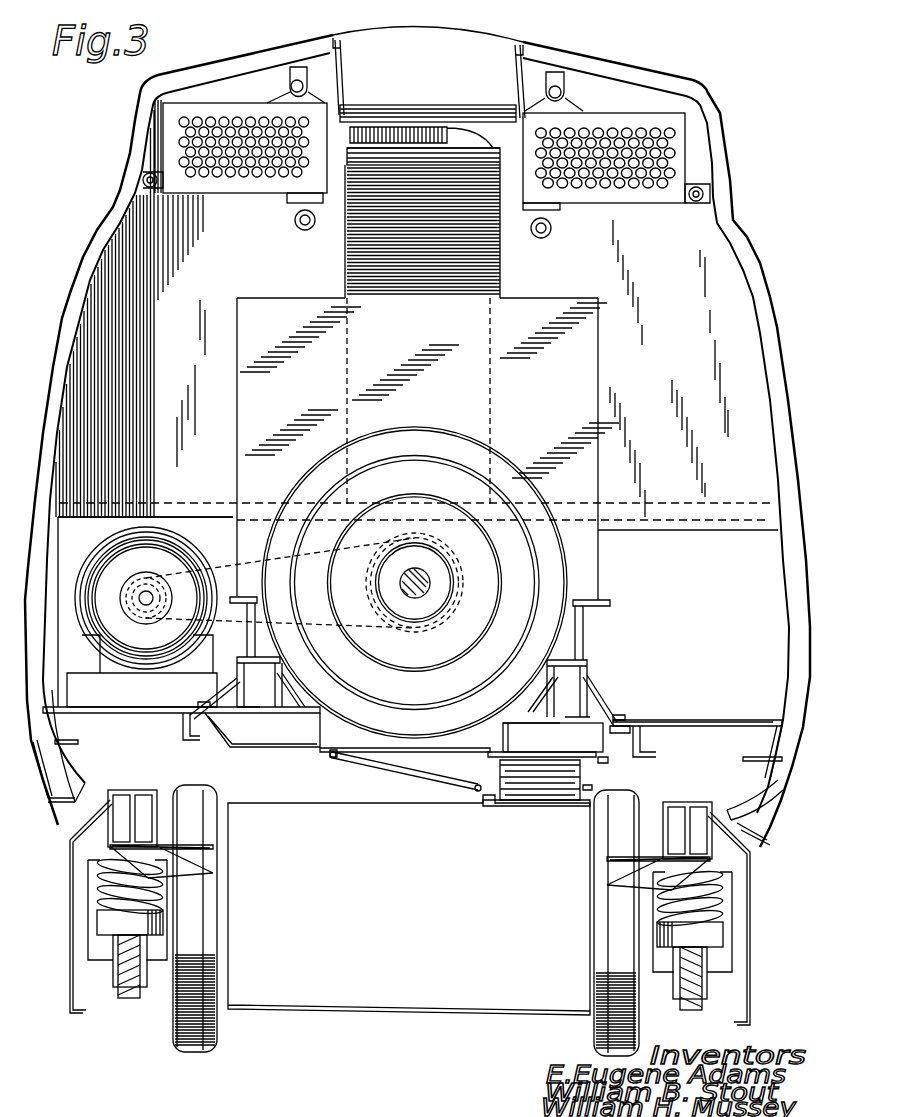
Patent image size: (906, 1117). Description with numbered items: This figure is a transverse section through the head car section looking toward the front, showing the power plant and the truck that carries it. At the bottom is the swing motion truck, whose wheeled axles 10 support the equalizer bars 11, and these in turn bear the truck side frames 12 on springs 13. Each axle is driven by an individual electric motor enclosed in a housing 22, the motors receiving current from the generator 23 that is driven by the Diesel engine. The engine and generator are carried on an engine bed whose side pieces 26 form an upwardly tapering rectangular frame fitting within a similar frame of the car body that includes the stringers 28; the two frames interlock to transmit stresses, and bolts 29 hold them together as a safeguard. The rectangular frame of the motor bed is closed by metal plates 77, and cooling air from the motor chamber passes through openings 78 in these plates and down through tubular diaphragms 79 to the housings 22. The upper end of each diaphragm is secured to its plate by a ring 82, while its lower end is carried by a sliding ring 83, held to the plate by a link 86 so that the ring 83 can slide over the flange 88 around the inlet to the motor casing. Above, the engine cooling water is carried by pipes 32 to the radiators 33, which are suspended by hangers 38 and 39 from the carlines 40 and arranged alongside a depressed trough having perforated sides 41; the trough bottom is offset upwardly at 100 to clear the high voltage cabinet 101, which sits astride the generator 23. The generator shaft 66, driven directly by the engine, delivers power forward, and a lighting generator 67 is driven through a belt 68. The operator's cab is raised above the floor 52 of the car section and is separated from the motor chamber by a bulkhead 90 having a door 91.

The wheeled axle 10 is at (170, 930).
The equalizer bar 11 is at (127, 1000).
The truck side frame 12 is at (146, 790).
The spring 13 is at (105, 870).
The motor housing 22 is at (409, 905).
The generator 23 is at (414, 580).
The side piece 26 is at (210, 742).
The stringer 28 is at (185, 720).
The bolt 29 is at (202, 707).
The pipe 32 is at (296, 225).
The radiator 33 is at (236, 91).
The hanger 38 is at (297, 70).
The hanger 39 is at (145, 180).
The carline 40 is at (160, 88).
The perforated side 41 is at (338, 70).
The floor 52 is at (750, 722).
The generator shaft 66 is at (420, 589).
The lighting generator 67 is at (100, 548).
The belt 68 is at (222, 562).
The metal plate 77 is at (275, 750).
The opening 78 is at (545, 740).
The tubular diaphragm 79 is at (535, 772).
The ring 82 is at (600, 760).
The sliding ring 83 is at (584, 797).
The link 86 is at (392, 772).
The flange 88 is at (583, 808).
The bulkhead 90 is at (703, 283).
The door 91 is at (460, 130).
The upward offset of trough bottom 100 is at (412, 120).
The high voltage cabinet 101 is at (418, 382).